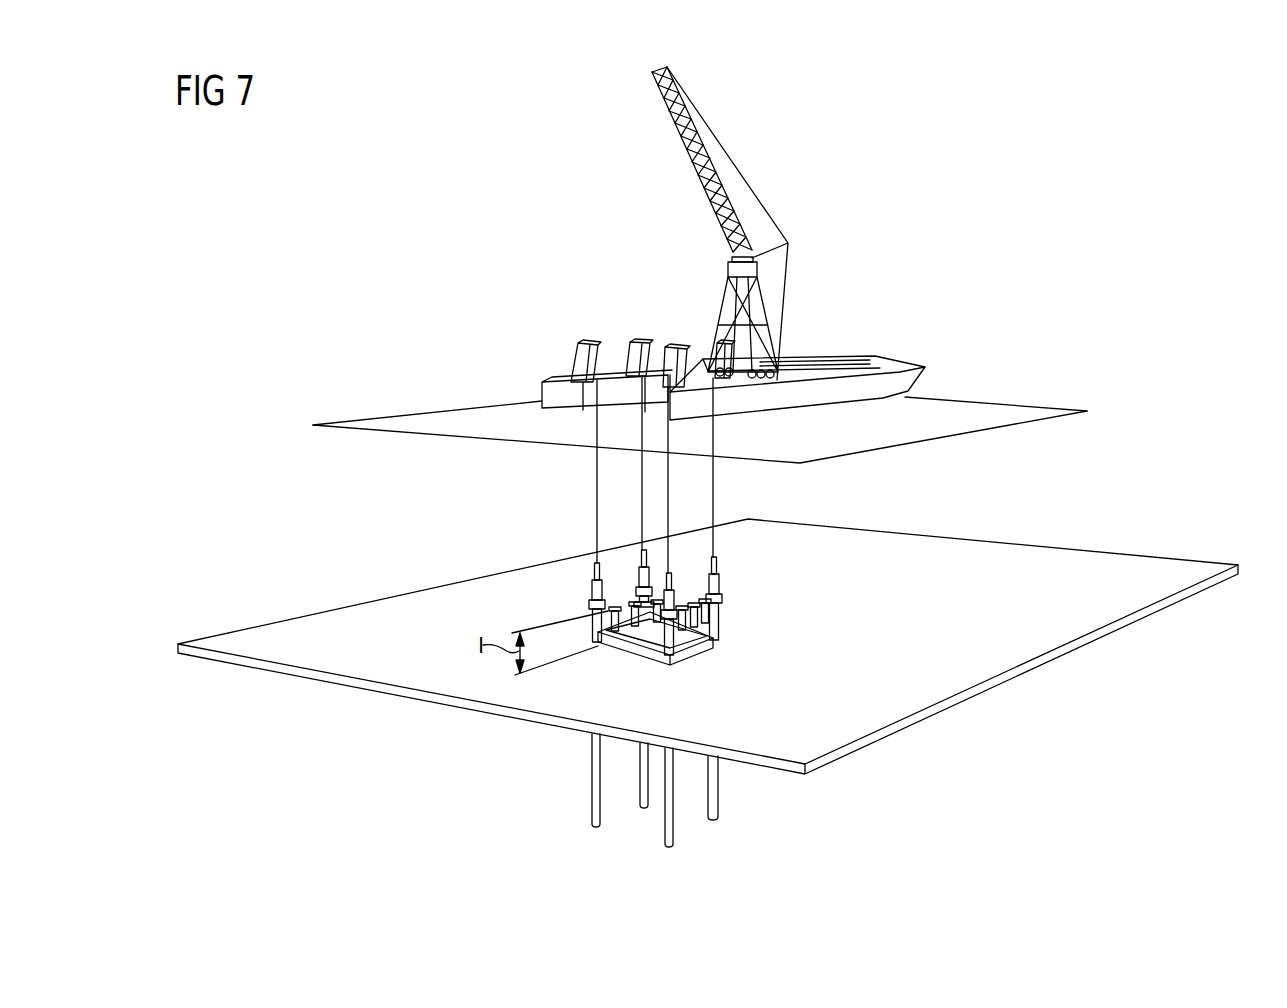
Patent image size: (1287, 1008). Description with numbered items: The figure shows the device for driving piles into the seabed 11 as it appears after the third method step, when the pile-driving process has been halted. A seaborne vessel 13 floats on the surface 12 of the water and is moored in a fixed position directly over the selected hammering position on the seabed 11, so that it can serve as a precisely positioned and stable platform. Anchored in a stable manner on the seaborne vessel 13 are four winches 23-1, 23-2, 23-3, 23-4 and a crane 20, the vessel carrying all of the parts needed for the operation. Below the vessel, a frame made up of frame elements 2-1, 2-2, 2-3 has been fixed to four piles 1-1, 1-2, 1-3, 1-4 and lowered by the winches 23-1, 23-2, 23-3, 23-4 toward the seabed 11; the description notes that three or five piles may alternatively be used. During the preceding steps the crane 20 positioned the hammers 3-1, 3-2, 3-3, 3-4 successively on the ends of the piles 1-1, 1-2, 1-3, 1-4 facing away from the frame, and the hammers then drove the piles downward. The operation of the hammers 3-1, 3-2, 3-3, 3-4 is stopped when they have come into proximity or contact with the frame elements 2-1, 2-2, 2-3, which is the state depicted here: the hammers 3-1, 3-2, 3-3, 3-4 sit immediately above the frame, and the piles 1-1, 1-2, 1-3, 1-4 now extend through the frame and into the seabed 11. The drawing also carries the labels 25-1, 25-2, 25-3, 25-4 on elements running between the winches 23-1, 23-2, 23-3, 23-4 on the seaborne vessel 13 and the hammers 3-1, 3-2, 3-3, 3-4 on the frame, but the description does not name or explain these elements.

The pile 1-1 is at (717, 790).
The pile 1-2 is at (673, 832).
The pile 1-3 is at (592, 802).
The pile 1-4 is at (641, 797).
The frame element 2-1 is at (722, 628).
The frame element 2-2 is at (672, 666).
The frame element 2-3 is at (597, 640).
The hammer 3-1 is at (723, 588).
The hammer 3-2 is at (677, 642).
The hammer 3-3 is at (590, 599).
The hammer 3-4 is at (638, 575).
The seabed 11 is at (303, 626).
The surface 12 is at (1032, 404).
The seaborne vessel 13 is at (918, 380).
The crane 20 is at (812, 184).
The winch 23-1 is at (715, 335).
The winch 23-2 is at (670, 352).
The winch 23-3 is at (580, 366).
The winch 23-4 is at (630, 352).
The pile 25-1 is at (714, 535).
The pile 25-2 is at (669, 478).
The pile 25-3 is at (595, 470).
The pile 25-4 is at (641, 478).